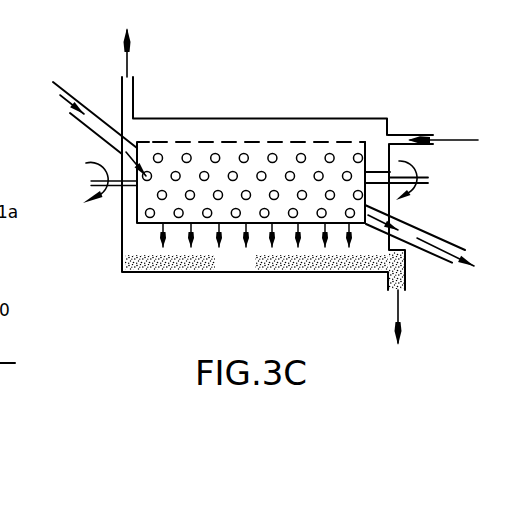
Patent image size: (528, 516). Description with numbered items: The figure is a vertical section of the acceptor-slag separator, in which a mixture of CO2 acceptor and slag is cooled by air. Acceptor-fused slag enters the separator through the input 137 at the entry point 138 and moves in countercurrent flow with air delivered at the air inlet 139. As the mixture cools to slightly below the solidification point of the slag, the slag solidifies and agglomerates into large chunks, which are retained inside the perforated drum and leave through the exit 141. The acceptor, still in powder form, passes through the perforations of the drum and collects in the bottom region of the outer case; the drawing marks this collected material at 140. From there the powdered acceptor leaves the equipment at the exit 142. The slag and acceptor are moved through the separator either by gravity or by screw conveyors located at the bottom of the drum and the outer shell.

The input 137 is at (121, 239).
The slag entry point 138 is at (84, 104).
The air delivery point 139 is at (425, 136).
The liquid sump 140 is at (252, 270).
The exit 141 is at (447, 238).
The exit 142 is at (405, 279).